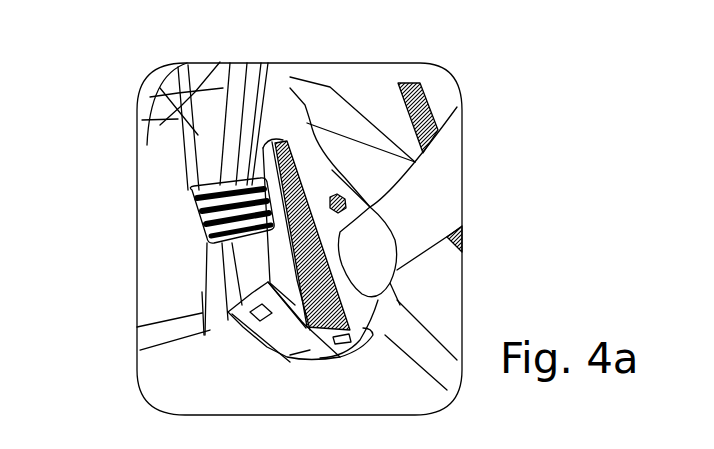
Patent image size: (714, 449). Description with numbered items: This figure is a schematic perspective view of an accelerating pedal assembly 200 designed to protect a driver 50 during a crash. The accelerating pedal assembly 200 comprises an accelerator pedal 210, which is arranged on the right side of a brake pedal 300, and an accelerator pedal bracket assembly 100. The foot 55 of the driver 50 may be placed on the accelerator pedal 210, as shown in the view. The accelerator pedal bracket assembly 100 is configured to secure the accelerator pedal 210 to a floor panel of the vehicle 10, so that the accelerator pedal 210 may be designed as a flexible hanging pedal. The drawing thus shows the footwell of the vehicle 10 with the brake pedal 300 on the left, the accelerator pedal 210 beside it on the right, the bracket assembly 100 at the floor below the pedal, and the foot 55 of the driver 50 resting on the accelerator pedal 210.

The vehicle 10 is at (222, 137).
The driver 50 is at (448, 180).
The foot 55 is at (310, 105).
The accelerator pedal bracket assembly 100 is at (243, 300).
The accelerating pedal assembly 200 is at (398, 297).
The accelerator pedal 210 is at (280, 132).
The brake pedal 300 is at (190, 205).